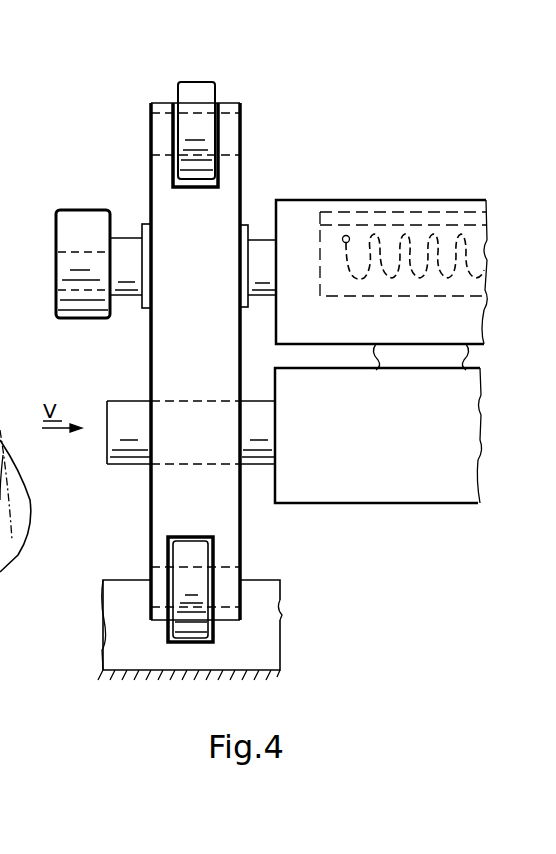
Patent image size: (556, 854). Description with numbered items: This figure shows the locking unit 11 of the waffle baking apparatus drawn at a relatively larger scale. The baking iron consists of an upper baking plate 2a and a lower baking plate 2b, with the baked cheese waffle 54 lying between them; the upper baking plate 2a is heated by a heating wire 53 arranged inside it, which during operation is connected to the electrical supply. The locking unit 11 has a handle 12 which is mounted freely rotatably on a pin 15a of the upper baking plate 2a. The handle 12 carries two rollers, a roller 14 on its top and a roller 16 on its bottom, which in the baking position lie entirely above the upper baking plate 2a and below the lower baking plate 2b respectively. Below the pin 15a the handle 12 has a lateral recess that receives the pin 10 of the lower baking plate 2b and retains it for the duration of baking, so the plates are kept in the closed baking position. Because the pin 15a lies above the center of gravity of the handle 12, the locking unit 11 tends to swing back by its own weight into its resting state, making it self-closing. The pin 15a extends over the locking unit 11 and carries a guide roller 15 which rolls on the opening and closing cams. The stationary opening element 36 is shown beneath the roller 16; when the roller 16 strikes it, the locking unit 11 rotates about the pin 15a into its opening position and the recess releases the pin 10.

The upper baking plate 2a is at (360, 223).
The lower baking plate 2b is at (470, 470).
The pin 10 is at (126, 452).
The locking unit 11 is at (128, 325).
The handle 12 is at (228, 527).
The roller 14 is at (204, 96).
The guide roller 15 is at (62, 252).
The pin 15a is at (132, 252).
The roller 16 is at (182, 556).
The opening element 36 is at (268, 626).
The heating wire 53 is at (462, 262).
The baked cheese waffle 54 is at (455, 358).